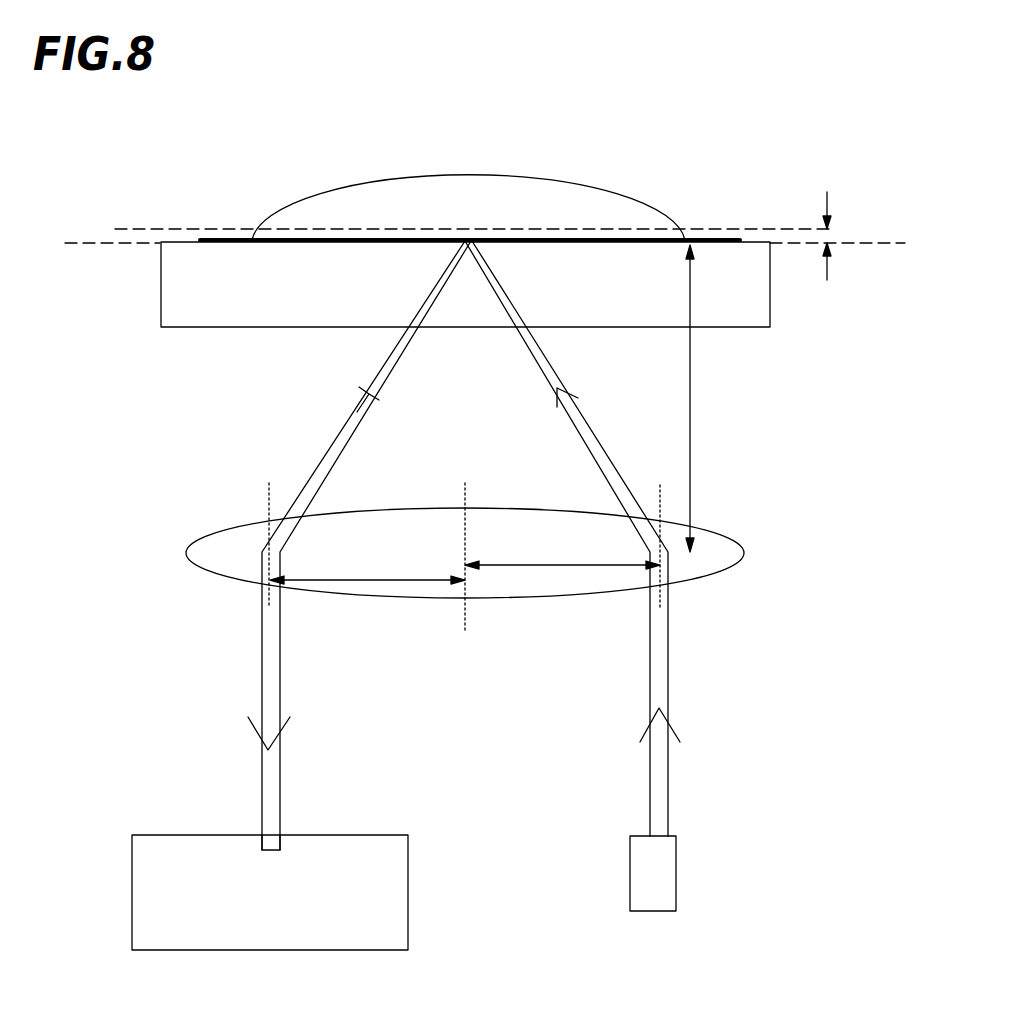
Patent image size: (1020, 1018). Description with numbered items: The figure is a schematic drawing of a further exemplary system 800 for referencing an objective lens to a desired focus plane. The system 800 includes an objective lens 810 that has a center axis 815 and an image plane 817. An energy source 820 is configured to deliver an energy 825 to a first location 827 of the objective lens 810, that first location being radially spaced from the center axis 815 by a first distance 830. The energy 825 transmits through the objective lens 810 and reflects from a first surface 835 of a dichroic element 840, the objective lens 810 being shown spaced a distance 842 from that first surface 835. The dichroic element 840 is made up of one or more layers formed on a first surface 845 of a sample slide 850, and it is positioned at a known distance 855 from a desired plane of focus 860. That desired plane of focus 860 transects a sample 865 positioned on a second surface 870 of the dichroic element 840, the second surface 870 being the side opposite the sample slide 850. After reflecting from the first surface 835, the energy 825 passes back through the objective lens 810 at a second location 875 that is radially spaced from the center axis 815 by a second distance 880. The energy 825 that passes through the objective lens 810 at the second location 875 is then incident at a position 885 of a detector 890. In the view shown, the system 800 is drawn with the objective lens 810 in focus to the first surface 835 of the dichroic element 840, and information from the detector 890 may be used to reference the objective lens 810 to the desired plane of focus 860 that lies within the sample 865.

The system 800 is at (298, 136).
The objective lens 810 is at (735, 554).
The center axis 815 is at (467, 630).
The image plane 817 is at (80, 240).
The energy source 820 is at (655, 882).
The energy 825 is at (662, 781).
The first location 827 is at (660, 485).
The first distance 830 is at (562, 565).
The first surface 835 is at (722, 253).
The dichroic element 840 is at (200, 241).
The distance 842 is at (692, 393).
The first surface of sample slide 845 is at (766, 228).
The sample slide 850 is at (757, 316).
The known distance 855 is at (826, 238).
The desired plane of focus 860 is at (795, 228).
The sample 865 is at (575, 185).
The second surface 870 is at (226, 228).
The second location 875 is at (270, 483).
The second distance 880 is at (360, 580).
The position 885 is at (276, 845).
The detector 890 is at (393, 888).